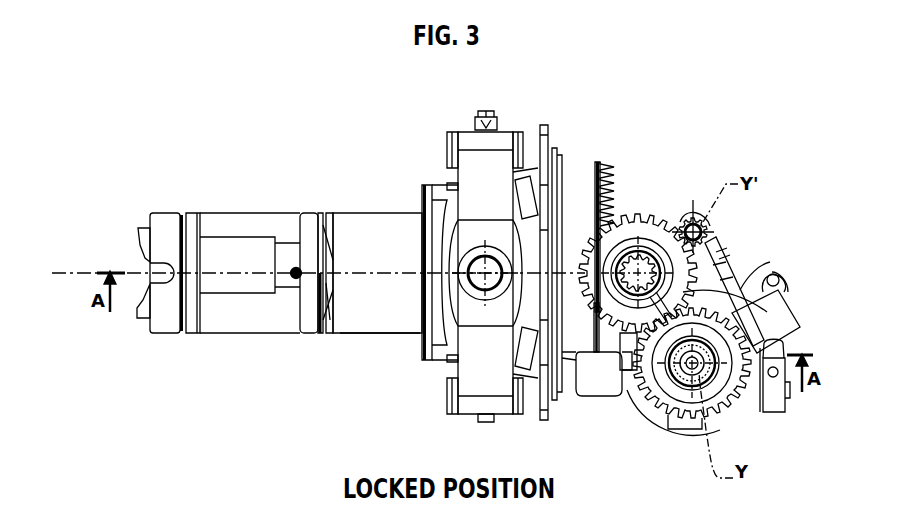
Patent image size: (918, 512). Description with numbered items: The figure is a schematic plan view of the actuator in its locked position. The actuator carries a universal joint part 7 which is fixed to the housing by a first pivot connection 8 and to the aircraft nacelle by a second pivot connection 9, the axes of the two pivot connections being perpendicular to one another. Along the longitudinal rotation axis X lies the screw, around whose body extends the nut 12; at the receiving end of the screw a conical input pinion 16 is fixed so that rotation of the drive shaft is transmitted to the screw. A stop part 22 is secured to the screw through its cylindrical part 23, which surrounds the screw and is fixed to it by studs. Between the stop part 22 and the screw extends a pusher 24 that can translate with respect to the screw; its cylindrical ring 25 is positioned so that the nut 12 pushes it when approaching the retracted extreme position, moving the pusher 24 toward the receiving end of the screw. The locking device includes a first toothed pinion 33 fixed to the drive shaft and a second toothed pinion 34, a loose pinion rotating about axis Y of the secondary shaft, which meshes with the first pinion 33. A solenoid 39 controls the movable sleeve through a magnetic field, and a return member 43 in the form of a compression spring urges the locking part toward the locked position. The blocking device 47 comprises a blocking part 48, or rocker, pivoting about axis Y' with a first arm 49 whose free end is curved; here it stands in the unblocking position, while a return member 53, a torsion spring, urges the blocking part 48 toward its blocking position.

The universal joint part 7 is at (436, 193).
The first pivot connection 8 is at (487, 116).
The second pivot connection 9 is at (478, 287).
The nut 12 is at (266, 219).
The conical input pinion 16 is at (594, 172).
The stop part 22 is at (371, 224).
The cylindrical part 23 is at (376, 322).
The pusher 24 is at (327, 228).
The cylindrical ring 25 is at (324, 322).
The first toothed pinion 33 is at (654, 228).
The second toothed pinion 34 is at (672, 416).
The solenoid 39 is at (732, 420).
The return member 43 is at (785, 306).
The blocking device 47 is at (731, 251).
The blocking part 48 is at (778, 292).
The first arm 49 is at (740, 275).
The return member 53 is at (690, 218).